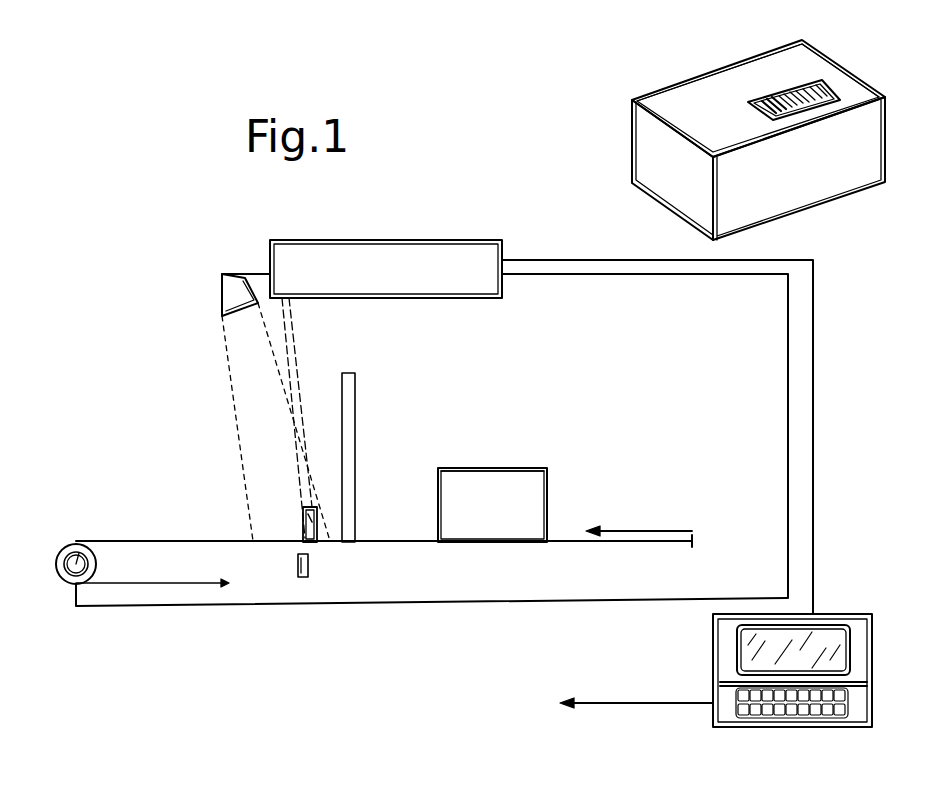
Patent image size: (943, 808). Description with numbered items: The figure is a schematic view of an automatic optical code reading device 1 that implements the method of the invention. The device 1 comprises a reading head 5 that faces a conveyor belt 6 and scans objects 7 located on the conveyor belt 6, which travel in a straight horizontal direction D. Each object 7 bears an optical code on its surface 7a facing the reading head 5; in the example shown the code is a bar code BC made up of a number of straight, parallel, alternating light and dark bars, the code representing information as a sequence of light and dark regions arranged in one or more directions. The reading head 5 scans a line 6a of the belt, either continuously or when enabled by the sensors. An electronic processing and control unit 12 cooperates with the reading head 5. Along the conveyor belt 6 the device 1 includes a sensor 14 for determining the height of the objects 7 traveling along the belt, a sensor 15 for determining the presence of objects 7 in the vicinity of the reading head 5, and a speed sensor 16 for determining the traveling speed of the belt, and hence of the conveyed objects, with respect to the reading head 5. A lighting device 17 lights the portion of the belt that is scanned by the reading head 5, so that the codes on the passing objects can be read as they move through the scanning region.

The automatic optical code reading device 1 is at (140, 651).
The reading head 5 is at (506, 236).
The conveyor belt 6 is at (392, 491).
The line of the belt 6a is at (300, 538).
The object 7 is at (312, 512).
The surface of object 7a is at (514, 462).
The electronic processing and control unit 12 is at (855, 630).
The sensor 14 is at (347, 428).
The sensor 15 is at (303, 578).
The speed sensor 16 is at (76, 558).
The lighting device 17 is at (236, 295).
The bar code BC is at (807, 82).
The direction D is at (648, 530).